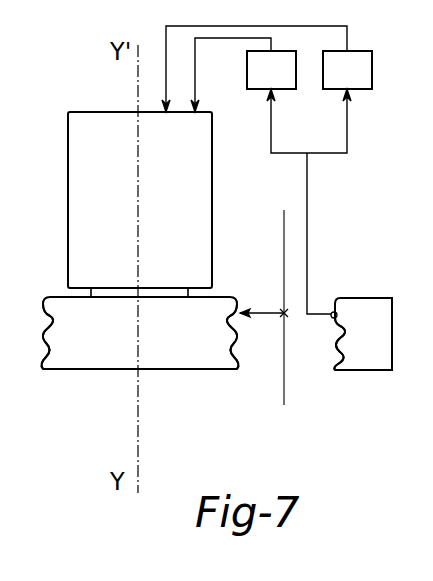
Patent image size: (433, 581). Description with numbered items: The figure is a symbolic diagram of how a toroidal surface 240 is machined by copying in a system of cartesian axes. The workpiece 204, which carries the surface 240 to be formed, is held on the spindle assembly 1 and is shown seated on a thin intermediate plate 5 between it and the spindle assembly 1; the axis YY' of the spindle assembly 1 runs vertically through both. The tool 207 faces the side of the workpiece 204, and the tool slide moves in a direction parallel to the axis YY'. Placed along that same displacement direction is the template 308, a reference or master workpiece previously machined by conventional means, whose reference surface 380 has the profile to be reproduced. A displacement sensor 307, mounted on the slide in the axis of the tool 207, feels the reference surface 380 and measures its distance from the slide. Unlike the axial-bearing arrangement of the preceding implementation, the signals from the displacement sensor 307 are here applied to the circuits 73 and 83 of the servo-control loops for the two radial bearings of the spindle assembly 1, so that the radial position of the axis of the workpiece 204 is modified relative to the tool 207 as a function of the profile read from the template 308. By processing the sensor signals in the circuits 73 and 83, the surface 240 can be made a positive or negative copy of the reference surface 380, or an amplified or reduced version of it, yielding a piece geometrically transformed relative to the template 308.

The spindle assembly 1 is at (68, 171).
The support plate 5 is at (91, 293).
The workpiece 204 is at (178, 355).
The toroidal surface 240 is at (44, 352).
The tool 207 is at (243, 317).
The circuit of the servo-control loop for a radial bearing 73 is at (256, 80).
The circuit of the servo-control loop for a radial bearing 83 is at (363, 80).
The displacement sensor 307 is at (334, 311).
The template 308 is at (374, 357).
The reference surface 380 is at (338, 354).